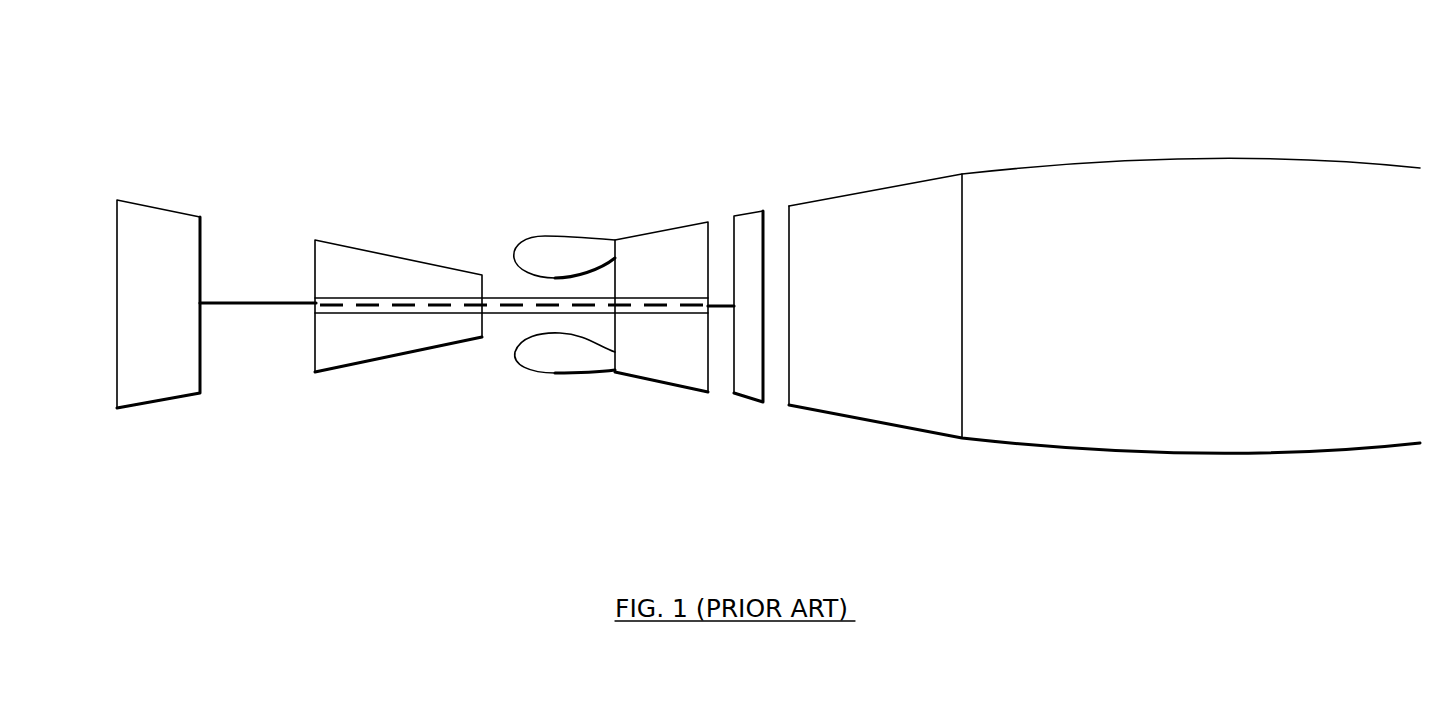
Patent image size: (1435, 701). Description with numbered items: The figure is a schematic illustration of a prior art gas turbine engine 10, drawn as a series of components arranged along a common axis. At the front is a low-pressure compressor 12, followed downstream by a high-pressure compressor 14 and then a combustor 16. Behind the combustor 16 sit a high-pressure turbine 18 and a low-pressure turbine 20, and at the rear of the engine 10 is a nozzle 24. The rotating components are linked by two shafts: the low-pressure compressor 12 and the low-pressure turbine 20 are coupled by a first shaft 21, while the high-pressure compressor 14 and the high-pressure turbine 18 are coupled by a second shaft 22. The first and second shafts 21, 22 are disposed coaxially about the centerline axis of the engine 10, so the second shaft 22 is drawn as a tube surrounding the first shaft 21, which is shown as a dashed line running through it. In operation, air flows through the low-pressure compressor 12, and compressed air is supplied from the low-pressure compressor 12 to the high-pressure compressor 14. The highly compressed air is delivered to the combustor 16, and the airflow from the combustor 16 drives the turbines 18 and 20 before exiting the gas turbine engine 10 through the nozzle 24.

The gas turbine engine 10 is at (973, 90).
The low-pressure compressor 12 is at (182, 212).
The high-pressure compressor 14 is at (447, 347).
The combustor 16 is at (553, 374).
The high-pressure turbine 18 is at (677, 386).
The low-pressure turbine 20 is at (743, 398).
The first shaft 21 is at (232, 302).
The second shaft 22 is at (503, 297).
The nozzle 24 is at (1162, 458).